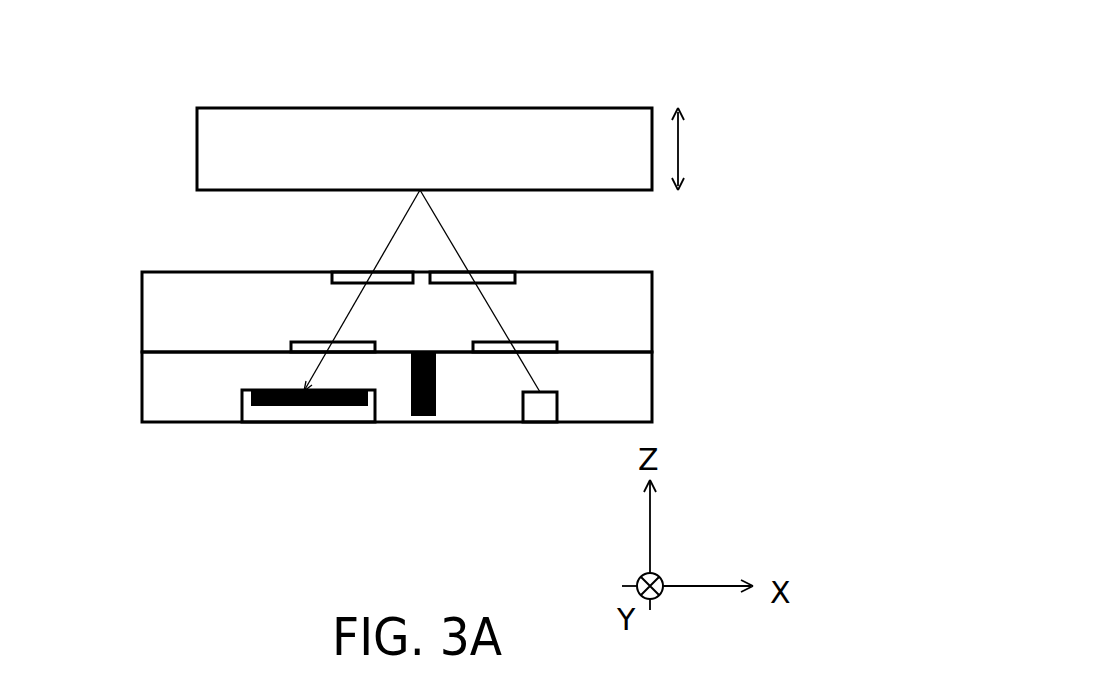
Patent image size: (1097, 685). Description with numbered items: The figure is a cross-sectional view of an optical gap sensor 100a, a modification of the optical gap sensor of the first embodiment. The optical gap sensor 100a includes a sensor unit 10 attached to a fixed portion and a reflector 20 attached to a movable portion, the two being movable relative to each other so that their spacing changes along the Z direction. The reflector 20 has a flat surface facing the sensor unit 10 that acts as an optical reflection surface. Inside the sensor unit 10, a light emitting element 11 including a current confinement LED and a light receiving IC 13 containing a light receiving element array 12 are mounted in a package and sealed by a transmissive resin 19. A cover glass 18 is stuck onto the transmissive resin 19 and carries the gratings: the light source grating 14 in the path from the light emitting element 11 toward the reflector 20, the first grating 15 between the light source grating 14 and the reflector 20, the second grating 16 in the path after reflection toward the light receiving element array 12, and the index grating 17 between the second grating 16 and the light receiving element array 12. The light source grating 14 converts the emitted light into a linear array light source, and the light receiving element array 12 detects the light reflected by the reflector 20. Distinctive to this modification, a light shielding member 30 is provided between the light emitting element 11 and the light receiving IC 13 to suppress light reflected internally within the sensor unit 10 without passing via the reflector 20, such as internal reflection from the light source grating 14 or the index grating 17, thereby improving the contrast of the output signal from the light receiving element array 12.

The optical gap sensor 100a is at (750, 48).
The reflector 20 is at (230, 108).
The sensor unit 10 is at (426, 331).
The cover glass 18 is at (651, 297).
The transmissive resin 19 is at (142, 405).
The second grating 16 is at (347, 272).
The first grating 15 is at (515, 272).
The index grating 17 is at (310, 342).
The light source grating 14 is at (557, 342).
The light receiving IC 13 is at (240, 412).
The light receiving element array 12 is at (273, 405).
The light shielding member 30 is at (422, 415).
The light emitting element 11 is at (557, 400).